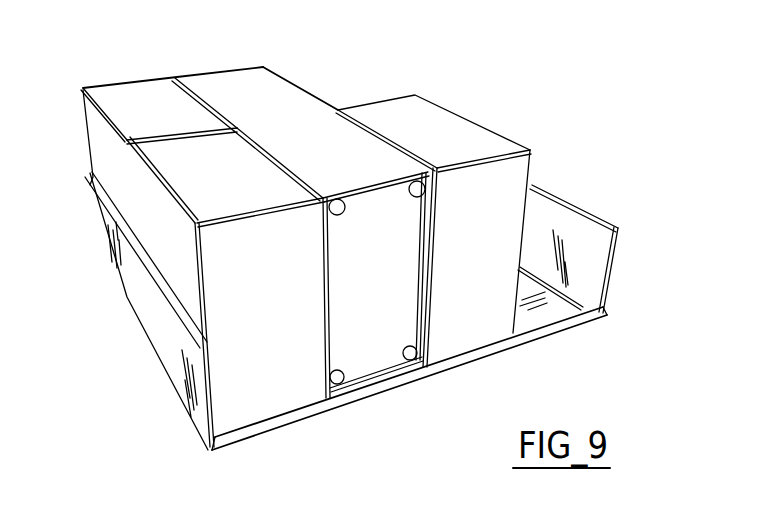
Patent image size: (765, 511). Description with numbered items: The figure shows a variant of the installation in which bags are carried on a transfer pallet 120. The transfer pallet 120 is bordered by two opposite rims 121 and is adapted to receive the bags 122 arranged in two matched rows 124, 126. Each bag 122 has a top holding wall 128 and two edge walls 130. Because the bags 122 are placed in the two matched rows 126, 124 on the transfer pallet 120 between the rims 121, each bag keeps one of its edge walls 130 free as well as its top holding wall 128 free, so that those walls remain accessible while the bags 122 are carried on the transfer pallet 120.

The transfer pallet 120 is at (570, 323).
The rim 121 is at (176, 373).
The bag 122 is at (468, 139).
The matched row 124 is at (170, 274).
The matched row 126 is at (120, 198).
The top holding wall 128 is at (142, 103).
The edge wall 130 is at (266, 297).